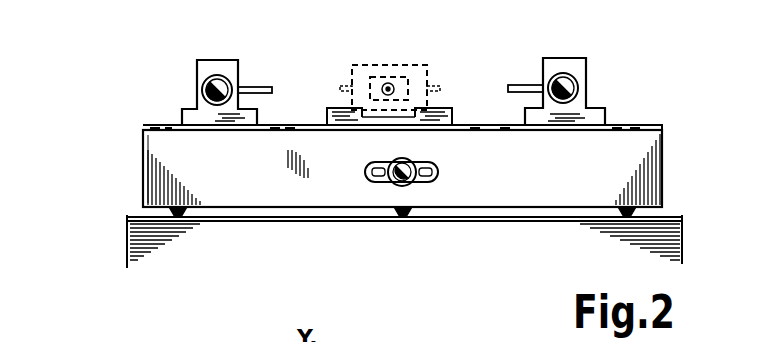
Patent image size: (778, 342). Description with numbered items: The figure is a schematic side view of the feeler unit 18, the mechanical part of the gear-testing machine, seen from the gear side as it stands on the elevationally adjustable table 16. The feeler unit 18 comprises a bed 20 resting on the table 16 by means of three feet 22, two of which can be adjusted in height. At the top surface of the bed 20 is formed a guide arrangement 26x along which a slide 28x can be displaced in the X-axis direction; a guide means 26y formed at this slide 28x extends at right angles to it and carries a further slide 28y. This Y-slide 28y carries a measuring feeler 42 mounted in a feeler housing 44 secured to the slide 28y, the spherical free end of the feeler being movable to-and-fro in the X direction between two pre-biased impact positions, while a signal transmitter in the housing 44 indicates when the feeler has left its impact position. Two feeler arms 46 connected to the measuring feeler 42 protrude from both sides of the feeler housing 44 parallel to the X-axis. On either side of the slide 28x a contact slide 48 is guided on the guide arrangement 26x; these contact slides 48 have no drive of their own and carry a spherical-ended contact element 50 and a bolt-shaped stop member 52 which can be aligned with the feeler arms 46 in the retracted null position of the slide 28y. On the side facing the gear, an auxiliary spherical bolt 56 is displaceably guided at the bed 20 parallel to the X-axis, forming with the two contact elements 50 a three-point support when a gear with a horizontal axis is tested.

The table 16 is at (127, 262).
The feeler unit 18 is at (104, 92).
The bed 20 is at (143, 160).
The feet 22 is at (178, 218).
The guide arrangement 26x is at (640, 126).
The guide means 26y is at (373, 118).
The slide 28x is at (440, 116).
The slide 28y is at (410, 70).
The measuring feeler 42 is at (386, 83).
The feeler housing 44 is at (355, 80).
The feeler arms 46 is at (345, 88).
The contact slides 48 is at (190, 112).
The contact elements 50 is at (215, 85).
The stop member 52 is at (250, 86).
The auxiliary spherical bolt 56 is at (410, 181).